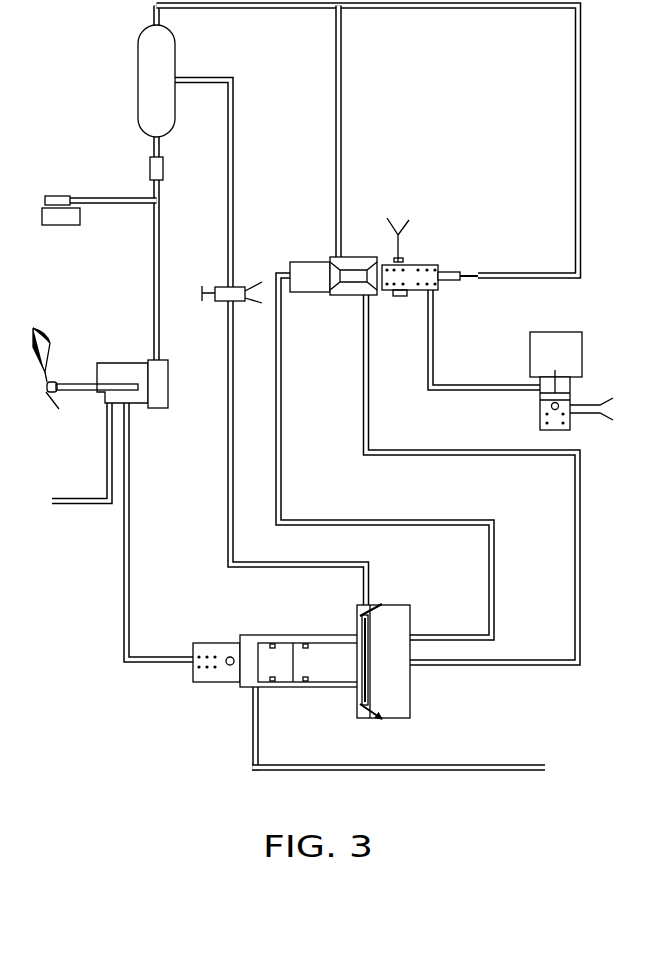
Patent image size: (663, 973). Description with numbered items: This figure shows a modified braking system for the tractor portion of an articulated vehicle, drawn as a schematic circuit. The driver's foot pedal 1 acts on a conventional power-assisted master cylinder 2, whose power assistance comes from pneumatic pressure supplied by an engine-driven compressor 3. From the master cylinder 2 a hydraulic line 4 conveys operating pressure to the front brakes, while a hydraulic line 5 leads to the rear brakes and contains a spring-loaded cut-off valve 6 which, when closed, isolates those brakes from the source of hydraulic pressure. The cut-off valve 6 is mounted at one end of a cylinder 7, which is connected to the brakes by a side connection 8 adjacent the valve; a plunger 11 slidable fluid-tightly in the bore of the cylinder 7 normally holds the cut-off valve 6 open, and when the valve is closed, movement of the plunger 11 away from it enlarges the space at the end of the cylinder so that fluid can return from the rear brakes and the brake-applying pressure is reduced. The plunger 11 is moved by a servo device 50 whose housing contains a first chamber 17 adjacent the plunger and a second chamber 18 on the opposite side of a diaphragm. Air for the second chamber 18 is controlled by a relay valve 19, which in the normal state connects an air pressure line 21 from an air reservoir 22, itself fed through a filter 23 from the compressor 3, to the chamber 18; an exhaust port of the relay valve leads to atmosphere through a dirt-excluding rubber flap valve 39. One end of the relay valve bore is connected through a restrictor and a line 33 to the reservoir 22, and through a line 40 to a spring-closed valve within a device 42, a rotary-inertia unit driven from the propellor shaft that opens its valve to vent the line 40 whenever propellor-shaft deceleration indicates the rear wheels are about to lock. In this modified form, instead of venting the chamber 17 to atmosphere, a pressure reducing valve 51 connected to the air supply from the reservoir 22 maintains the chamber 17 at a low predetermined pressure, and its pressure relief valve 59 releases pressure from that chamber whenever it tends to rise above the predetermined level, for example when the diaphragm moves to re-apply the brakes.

The foot pedal 1 is at (53, 372).
The master cylinder 2 is at (170, 392).
The compressor 3 is at (80, 215).
The hydraulic line 4 is at (88, 500).
The hydraulic line 5 is at (132, 470).
The cut-off valve 6 is at (229, 652).
The cylinder 7 is at (289, 687).
The side connection 8 is at (338, 760).
The plunger 11 is at (280, 651).
The first chamber 17 is at (361, 607).
The second chamber 18 is at (400, 622).
The relay valve 19 is at (441, 262).
The air pressure line 21 is at (342, 110).
The air reservoir 22 is at (178, 40).
The filter 23 is at (164, 168).
The line 33 is at (575, 125).
The flap valve 39 is at (410, 245).
The line 40 is at (434, 323).
The device 42 is at (586, 342).
The servo device 50 is at (405, 597).
The pressure reducing valve 51 is at (222, 286).
The pressure relief valve 59 is at (265, 282).